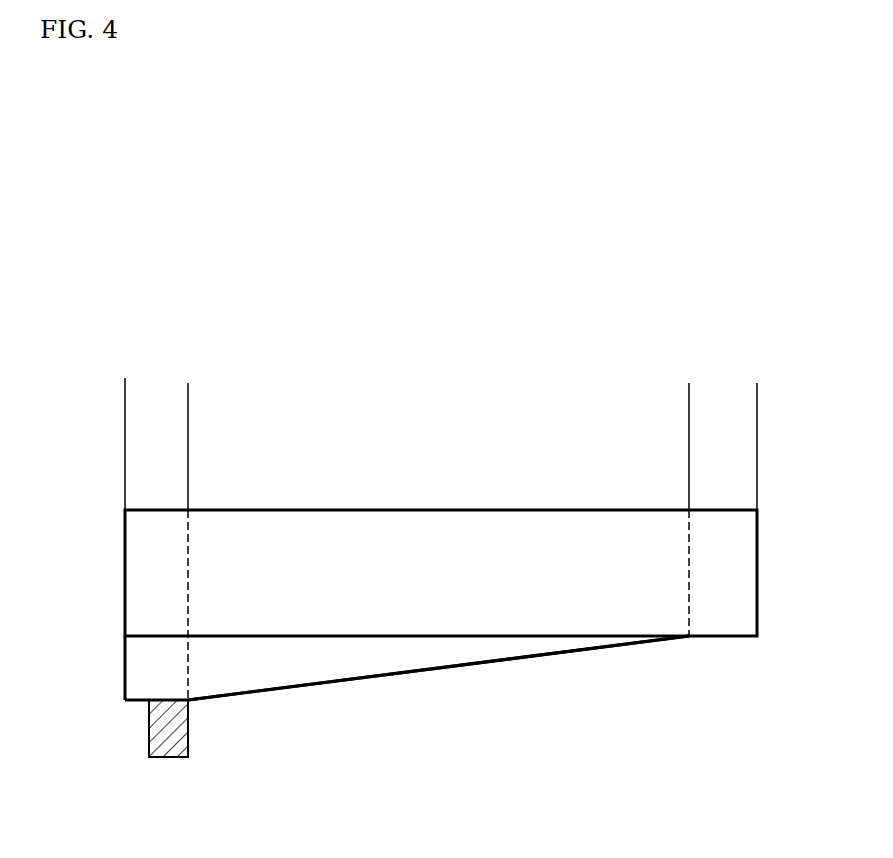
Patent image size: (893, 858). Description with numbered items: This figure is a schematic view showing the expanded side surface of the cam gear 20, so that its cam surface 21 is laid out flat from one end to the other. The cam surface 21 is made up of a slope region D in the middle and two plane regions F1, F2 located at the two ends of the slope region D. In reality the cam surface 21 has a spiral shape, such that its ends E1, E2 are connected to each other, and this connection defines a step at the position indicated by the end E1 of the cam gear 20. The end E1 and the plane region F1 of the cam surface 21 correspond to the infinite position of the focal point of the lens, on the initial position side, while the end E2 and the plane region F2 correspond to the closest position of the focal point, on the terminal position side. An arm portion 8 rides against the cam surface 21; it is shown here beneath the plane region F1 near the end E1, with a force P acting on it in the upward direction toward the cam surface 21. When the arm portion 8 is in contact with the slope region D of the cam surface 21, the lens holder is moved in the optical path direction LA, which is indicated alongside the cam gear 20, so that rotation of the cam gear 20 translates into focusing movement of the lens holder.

The arm portion 8 is at (188, 729).
The cam gear 20 is at (745, 580).
The cam surface 21 is at (372, 678).
The optical path direction LA is at (62, 698).
The slope region D is at (689, 443).
The plane region F1 is at (125, 443).
The plane region F2 is at (757, 443).
The end E1 is at (124, 730).
The end E2 is at (756, 672).
The pressing force P is at (168, 772).